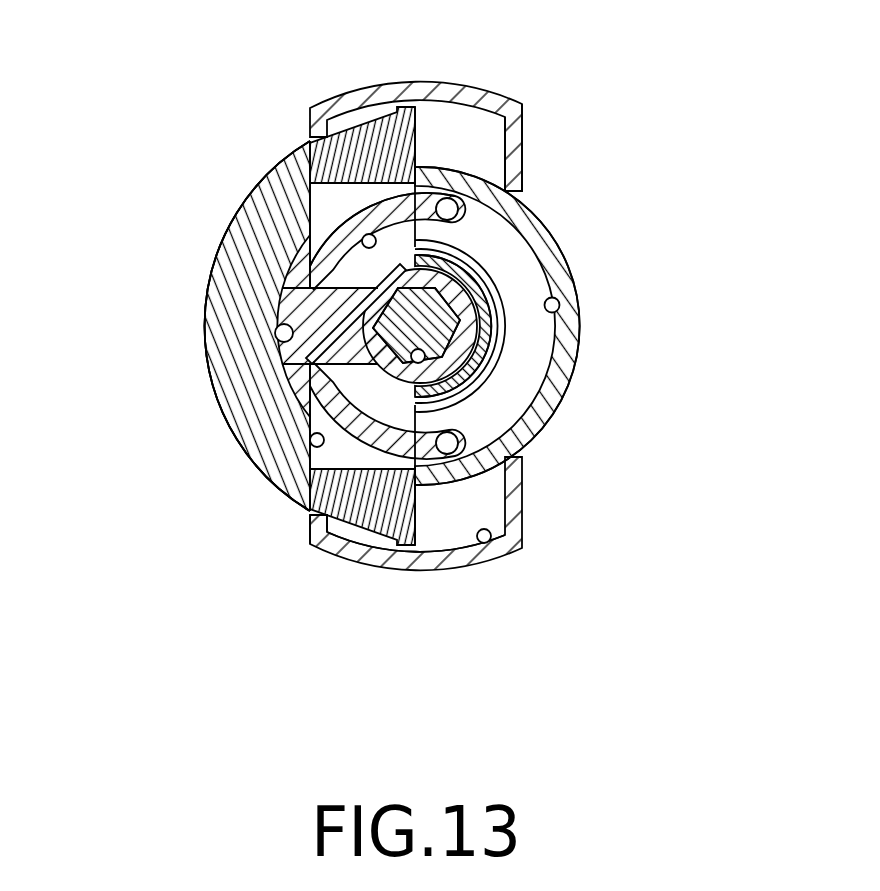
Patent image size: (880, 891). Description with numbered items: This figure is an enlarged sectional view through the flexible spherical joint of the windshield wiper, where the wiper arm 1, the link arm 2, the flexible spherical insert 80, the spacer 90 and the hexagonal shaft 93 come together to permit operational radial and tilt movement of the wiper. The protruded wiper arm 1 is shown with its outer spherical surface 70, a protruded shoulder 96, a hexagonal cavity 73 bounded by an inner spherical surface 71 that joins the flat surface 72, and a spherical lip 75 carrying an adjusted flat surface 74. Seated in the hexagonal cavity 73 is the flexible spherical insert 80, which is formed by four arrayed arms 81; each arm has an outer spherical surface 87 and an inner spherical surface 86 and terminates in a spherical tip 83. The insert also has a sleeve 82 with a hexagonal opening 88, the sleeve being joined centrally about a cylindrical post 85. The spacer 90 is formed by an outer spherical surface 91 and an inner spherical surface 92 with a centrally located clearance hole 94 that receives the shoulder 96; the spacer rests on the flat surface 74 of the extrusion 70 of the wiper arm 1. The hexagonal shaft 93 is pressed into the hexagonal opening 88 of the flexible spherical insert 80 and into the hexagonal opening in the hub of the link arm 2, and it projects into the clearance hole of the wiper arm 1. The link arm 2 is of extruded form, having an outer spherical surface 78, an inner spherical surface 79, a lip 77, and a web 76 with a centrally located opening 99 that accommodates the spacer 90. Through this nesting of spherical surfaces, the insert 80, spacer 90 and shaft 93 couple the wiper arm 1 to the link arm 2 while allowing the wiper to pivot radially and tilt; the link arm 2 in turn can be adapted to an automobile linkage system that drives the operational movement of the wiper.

The wiper arm 1 is at (283, 477).
The link arm 2 is at (456, 96).
The outer spherical surface 70 is at (203, 340).
The inner spherical surface 71 is at (206, 304).
The flat surface 72 is at (310, 432).
The hexagonal cavity 73 is at (332, 452).
The adjusted flat surface 74 is at (417, 503).
The spherical lip 75 is at (398, 563).
The web 76 is at (523, 515).
The lip 77 is at (308, 520).
The outer spherical surface 78 is at (318, 550).
The inner spherical surface 79 is at (481, 543).
The flexible spherical insert 80 is at (372, 330).
The arms 81 is at (374, 188).
The sleeve 82 is at (330, 243).
The spherical tips 83 is at (445, 186).
The cylindrical post 85 is at (327, 320).
The inner spherical surface 86 is at (356, 238).
The outer spherical surface 87 is at (375, 207).
The hexagonal opening 88 is at (470, 445).
The spacer 90 is at (572, 370).
The outer spherical surface 91 is at (513, 160).
The inner spherical surface 92 is at (553, 298).
The hexagonal shaft 93 is at (473, 337).
The clearance hole 94 is at (488, 362).
The protruded shoulder 96 is at (474, 296).
The opening 99 is at (523, 180).